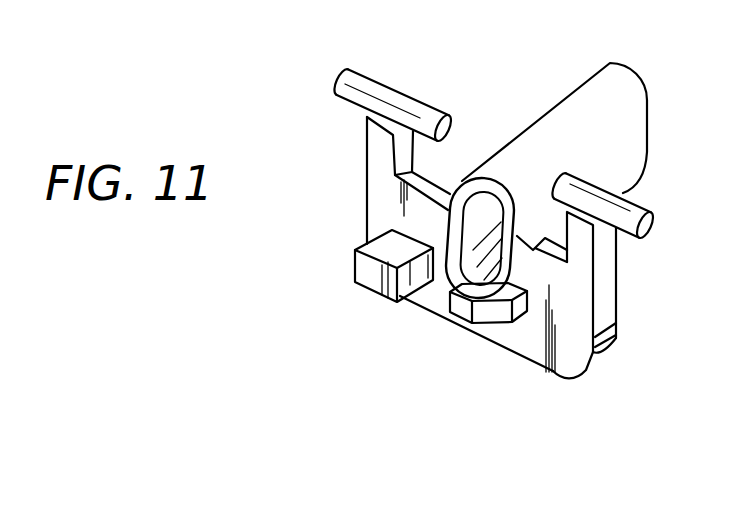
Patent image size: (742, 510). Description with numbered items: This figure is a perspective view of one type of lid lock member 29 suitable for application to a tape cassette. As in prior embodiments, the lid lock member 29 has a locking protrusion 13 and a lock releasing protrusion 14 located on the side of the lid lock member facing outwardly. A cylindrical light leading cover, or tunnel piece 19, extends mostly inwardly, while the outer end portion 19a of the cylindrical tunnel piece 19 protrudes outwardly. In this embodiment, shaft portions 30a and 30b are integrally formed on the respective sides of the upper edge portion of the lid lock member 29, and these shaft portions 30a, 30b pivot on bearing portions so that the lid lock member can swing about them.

The locking protrusion 13 is at (457, 318).
The lock releasing protrusion 14 is at (365, 270).
The cylindrical light leading cover or tunnel piece 19 is at (575, 98).
The outer end portion 19a is at (528, 252).
The lid lock member 29 is at (612, 293).
The shaft portion 30a is at (392, 98).
The shaft portion 30b is at (630, 207).